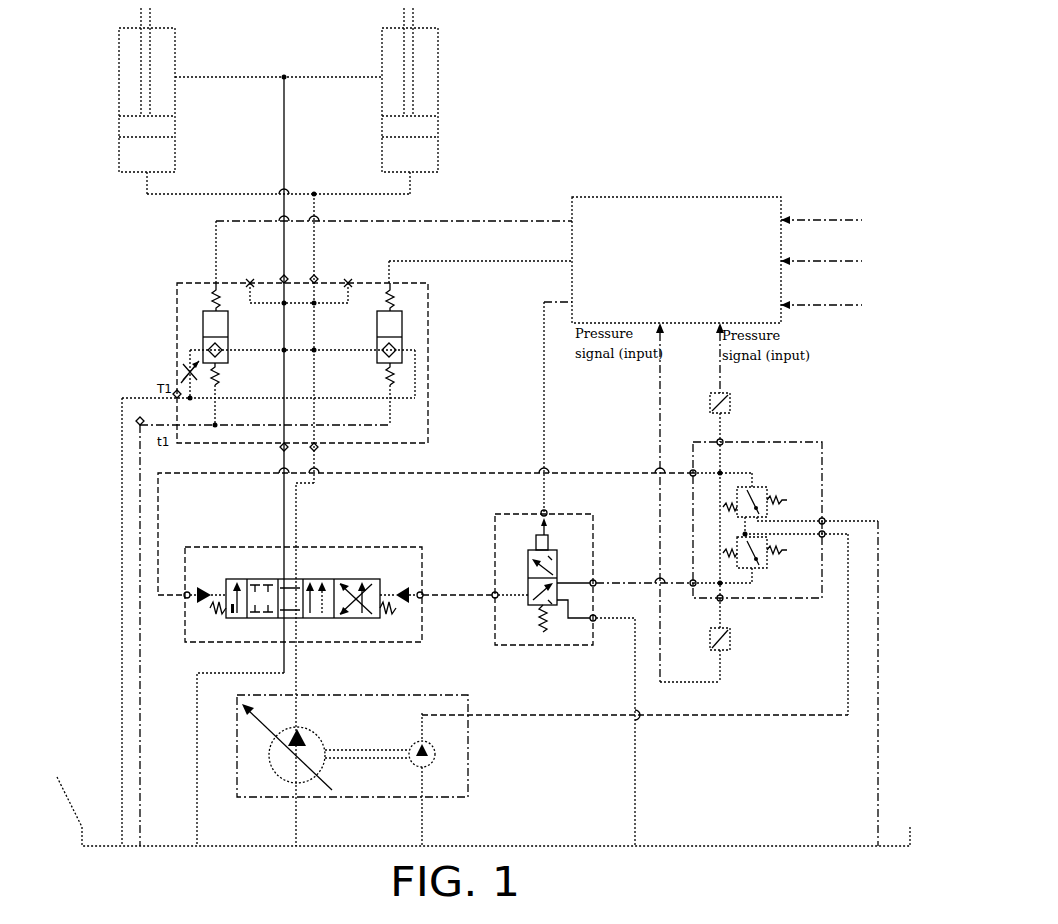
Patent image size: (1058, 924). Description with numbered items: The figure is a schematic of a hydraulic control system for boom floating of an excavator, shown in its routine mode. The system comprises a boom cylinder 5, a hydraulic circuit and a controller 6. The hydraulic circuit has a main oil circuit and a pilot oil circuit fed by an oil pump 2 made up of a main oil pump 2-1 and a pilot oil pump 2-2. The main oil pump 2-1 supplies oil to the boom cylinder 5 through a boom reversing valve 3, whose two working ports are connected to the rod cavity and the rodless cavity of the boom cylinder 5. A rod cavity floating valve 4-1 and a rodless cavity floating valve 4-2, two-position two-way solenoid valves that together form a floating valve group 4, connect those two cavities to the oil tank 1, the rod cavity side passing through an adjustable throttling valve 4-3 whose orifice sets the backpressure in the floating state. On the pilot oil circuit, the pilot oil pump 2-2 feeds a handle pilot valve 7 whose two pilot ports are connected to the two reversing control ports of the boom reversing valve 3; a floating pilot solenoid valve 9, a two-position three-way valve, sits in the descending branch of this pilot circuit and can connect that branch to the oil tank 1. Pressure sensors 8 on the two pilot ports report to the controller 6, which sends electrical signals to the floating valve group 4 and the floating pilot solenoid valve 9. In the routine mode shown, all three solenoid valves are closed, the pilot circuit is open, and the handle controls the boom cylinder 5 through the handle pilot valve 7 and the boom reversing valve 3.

The oil tank 1 is at (473, 806).
The oil pump 2 is at (252, 729).
The main oil pump 2-1 is at (277, 754).
The pilot oil pump 2-2 is at (417, 748).
The boom reversing valve 3 is at (222, 579).
The floating valve group 4 is at (232, 341).
The rod cavity floating valve 4-1 is at (203, 320).
The rodless cavity floating valve 4-2 is at (377, 315).
The adjustable throttling valve 4-3 is at (138, 375).
The boom cylinder 5 is at (127, 127).
The controller 6 is at (781, 197).
The handle pilot valve 7 is at (770, 455).
The pressure sensor 8 is at (731, 645).
The floating pilot solenoid valve 9 is at (548, 637).